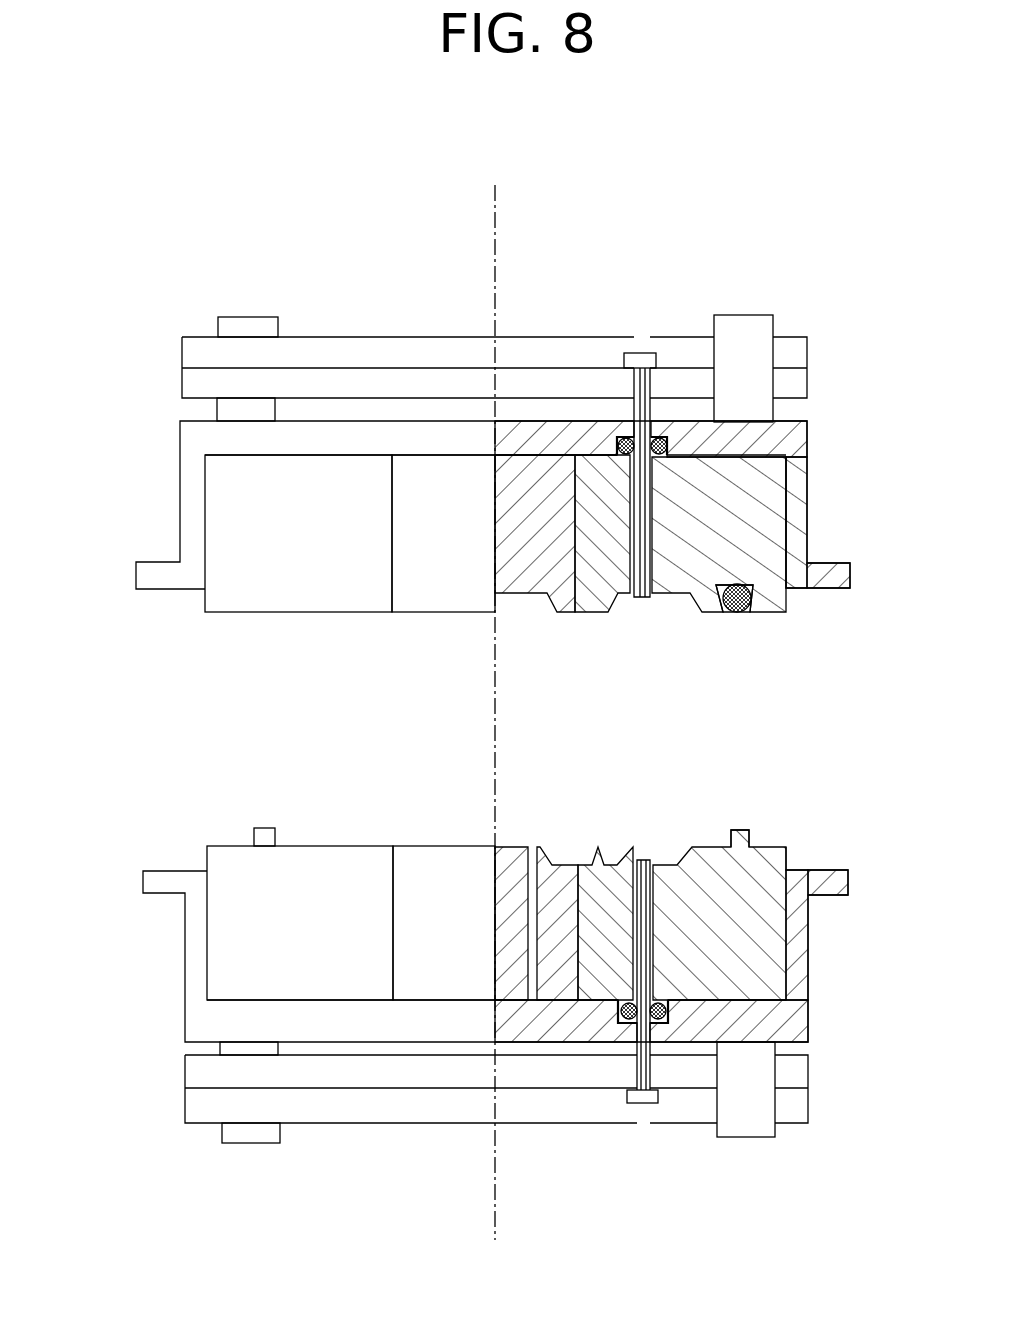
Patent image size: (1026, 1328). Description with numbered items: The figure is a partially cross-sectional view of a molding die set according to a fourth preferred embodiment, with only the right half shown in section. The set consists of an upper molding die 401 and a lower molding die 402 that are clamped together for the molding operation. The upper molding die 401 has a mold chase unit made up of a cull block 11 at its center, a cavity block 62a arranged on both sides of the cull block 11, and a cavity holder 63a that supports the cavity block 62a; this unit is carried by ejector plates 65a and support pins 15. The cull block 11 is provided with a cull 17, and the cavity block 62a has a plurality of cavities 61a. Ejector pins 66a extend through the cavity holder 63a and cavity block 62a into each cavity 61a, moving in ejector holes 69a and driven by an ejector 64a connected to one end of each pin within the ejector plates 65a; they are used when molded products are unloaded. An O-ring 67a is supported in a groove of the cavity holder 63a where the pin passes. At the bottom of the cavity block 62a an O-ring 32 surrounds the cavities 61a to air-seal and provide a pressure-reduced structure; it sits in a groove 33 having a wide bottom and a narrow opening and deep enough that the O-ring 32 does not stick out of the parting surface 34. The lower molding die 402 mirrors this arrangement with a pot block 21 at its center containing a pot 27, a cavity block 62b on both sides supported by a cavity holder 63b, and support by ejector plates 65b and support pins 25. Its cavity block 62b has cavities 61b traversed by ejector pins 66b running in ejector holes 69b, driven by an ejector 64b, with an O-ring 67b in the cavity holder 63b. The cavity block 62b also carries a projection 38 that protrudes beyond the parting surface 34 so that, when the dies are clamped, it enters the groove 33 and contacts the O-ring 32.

The upper molding die 401 is at (148, 485).
The lower molding die 402 is at (142, 955).
The support pins 15 is at (745, 312).
The ejector plates 65a is at (807, 384).
The cavity block 62a is at (778, 467).
The cavity holder 63a is at (793, 550).
The O-ring 67a is at (617, 437).
The ejector pins 66a is at (622, 427).
The ejector 64a is at (635, 353).
The ejector hole 69a is at (646, 597).
The parting surface 34 is at (302, 612).
The cull block 11 is at (428, 590).
The cull 17 is at (520, 598).
The cavities 61a is at (677, 612).
The groove 33 is at (723, 585).
The O-ring 32 is at (737, 612).
The ejector plates 65b is at (800, 1110).
The support pins 25 is at (748, 1137).
The cavity block 62b is at (773, 983).
The cavity holder 63b is at (808, 925).
The O-ring 67b is at (600, 1018).
The ejector pins 66b is at (645, 858).
The ejector 64b is at (643, 1105).
The ejector hole 69b is at (633, 860).
The pot block 21 is at (422, 862).
The pot 27 is at (531, 850).
The cavities 61b is at (676, 862).
The projection 38 is at (746, 830).